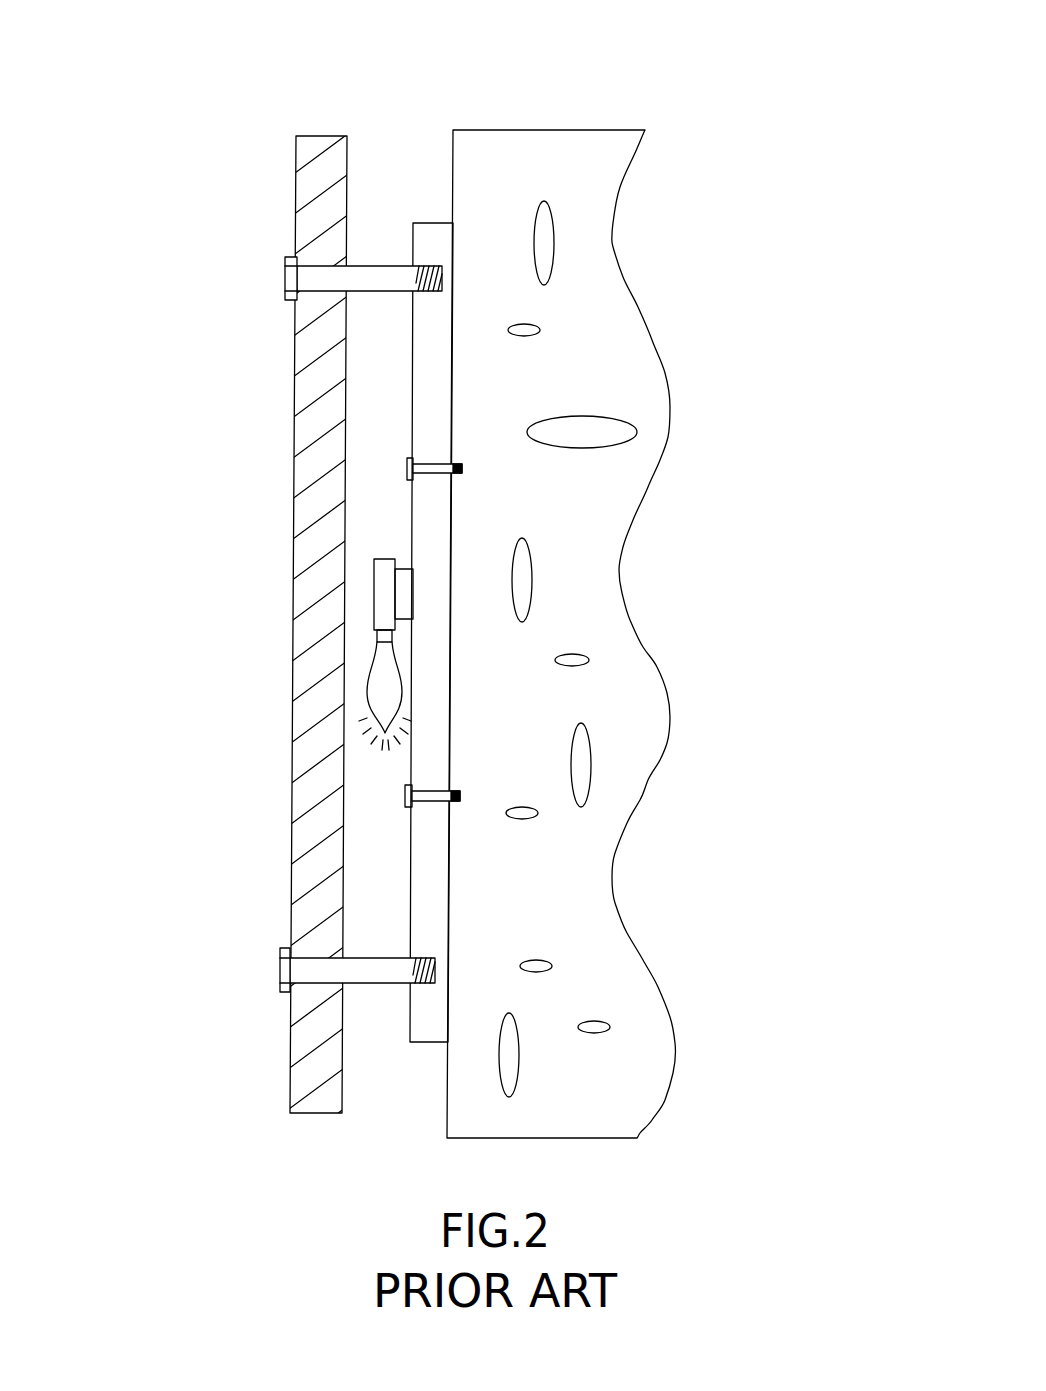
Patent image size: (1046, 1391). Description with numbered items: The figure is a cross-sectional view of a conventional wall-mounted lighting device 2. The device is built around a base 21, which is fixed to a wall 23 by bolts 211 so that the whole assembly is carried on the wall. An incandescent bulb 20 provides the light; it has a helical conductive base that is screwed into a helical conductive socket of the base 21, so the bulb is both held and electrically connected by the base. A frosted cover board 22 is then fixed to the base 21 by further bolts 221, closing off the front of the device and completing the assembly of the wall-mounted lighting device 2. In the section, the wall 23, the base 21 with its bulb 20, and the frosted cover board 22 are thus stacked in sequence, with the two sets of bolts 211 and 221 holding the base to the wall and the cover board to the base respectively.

The wall-mounted lighting device 2 is at (228, 462).
The incandescent bulb 20 is at (385, 698).
The base 21 is at (432, 243).
The bolts 211 is at (775, 908).
The frosted cover board 22 is at (310, 349).
The bolts 221 is at (312, 972).
The wall 23 is at (562, 502).